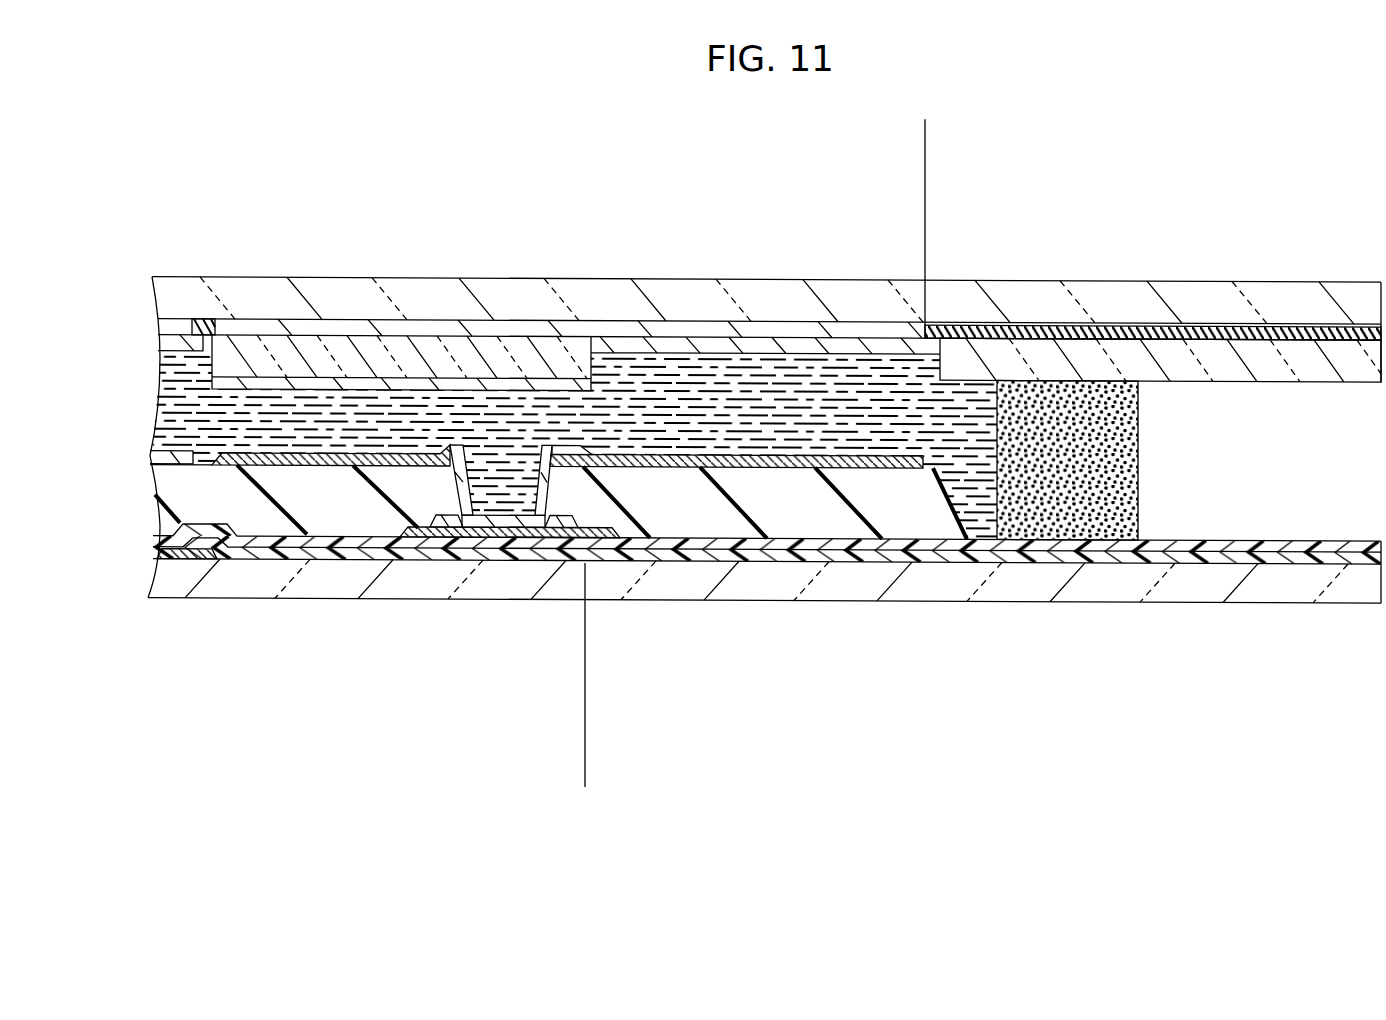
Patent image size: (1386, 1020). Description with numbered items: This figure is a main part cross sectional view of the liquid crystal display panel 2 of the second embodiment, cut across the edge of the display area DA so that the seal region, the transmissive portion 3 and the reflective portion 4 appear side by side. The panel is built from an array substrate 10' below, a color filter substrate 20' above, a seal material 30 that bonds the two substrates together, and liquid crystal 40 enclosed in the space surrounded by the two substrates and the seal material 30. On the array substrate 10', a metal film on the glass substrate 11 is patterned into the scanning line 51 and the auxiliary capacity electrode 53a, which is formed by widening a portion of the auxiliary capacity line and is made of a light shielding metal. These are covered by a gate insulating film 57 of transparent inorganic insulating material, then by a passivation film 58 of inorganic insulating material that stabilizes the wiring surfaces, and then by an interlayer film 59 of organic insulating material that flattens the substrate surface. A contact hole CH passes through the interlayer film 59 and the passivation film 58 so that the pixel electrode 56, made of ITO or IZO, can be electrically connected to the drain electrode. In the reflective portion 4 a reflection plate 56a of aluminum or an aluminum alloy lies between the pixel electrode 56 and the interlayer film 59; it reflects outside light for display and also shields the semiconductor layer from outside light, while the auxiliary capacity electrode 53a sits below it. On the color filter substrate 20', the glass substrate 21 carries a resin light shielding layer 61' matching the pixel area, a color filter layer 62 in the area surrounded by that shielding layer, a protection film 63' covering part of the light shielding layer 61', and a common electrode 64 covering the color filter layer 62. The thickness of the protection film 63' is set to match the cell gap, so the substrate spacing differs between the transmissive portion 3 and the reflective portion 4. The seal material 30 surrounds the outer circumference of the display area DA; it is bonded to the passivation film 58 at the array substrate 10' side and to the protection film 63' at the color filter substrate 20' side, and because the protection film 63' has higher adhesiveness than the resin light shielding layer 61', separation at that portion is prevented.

The liquid crystal display panel 2 is at (563, 100).
The transmissive portion 3 is at (585, 757).
The reflective portion 4 is at (513, 762).
The array substrate 10' is at (734, 588).
The glass substrate 11 is at (680, 575).
The color filter substrate 20' is at (736, 280).
The glass substrate 21 is at (352, 300).
The seal material 30 is at (1120, 442).
The liquid crystal 40 is at (175, 400).
The scanning line 51 is at (190, 560).
The auxiliary capacity electrode 53a is at (473, 557).
The pixel electrode 56 is at (190, 457).
The reflection plate 56a is at (280, 464).
The gate insulating film 57 is at (357, 557).
The passivation film 58 is at (240, 550).
The interlayer film 59 is at (173, 500).
The resin light shielding layer 61' is at (784, 267).
The color filter layer 62 is at (603, 328).
The protection film 63' is at (799, 288).
The common electrode 64 is at (786, 342).
The contact hole CH is at (503, 485).
The display area DA is at (925, 162).